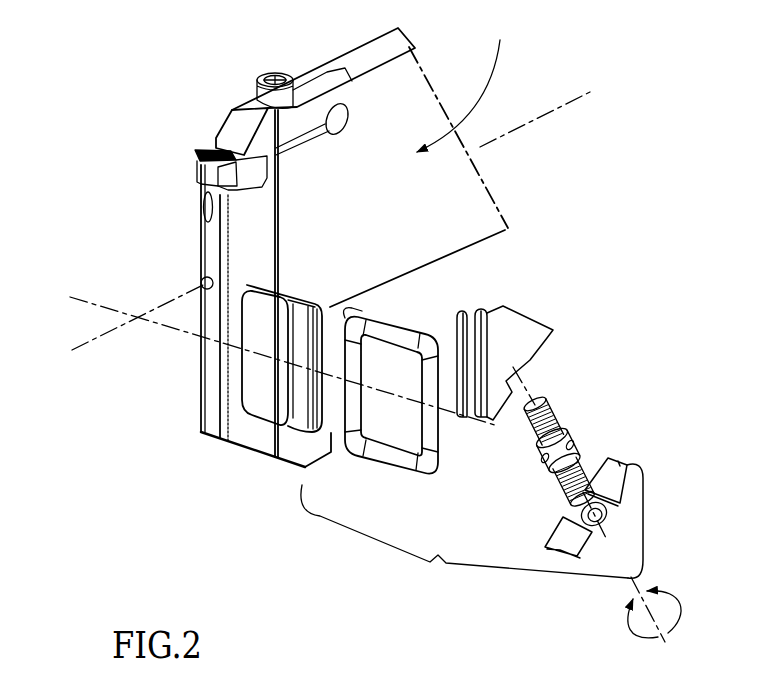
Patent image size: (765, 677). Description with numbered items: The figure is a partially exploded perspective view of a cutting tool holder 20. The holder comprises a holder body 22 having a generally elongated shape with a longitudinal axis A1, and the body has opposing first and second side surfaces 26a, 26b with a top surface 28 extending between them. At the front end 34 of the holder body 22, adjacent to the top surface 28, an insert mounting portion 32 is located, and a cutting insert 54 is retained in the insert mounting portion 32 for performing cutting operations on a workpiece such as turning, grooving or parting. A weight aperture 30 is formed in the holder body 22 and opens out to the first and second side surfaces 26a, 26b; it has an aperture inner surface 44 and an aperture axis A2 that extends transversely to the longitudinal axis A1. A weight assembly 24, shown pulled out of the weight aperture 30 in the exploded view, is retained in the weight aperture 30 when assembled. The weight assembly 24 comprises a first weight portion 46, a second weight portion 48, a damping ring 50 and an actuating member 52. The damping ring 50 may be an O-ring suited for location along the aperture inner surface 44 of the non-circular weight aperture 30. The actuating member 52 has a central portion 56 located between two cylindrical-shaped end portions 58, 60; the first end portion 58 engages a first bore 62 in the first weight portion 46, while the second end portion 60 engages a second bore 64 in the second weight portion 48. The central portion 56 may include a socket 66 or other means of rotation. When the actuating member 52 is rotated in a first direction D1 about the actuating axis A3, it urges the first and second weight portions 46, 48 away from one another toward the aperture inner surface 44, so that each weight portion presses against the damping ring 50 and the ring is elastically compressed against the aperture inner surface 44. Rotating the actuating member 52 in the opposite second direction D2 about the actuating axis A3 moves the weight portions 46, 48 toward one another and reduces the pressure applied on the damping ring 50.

The cutting tool holder 20 is at (152, 182).
The holder body 22 is at (437, 193).
The weight assembly 24 is at (464, 542).
The first side surface 26a is at (475, 83).
The second side surface 26b is at (297, 73).
The top surface 28 is at (318, 80).
The weight aperture 30 is at (266, 394).
The insert mounting portion 32 is at (222, 133).
The front end 34 is at (200, 238).
The aperture inner surface 44 is at (303, 392).
The first weight portion 46 is at (512, 343).
The second weight portion 48 is at (622, 524).
The damping ring 50 is at (386, 458).
The actuating member 52 is at (577, 423).
The cutting insert 54 is at (200, 170).
The central portion 56 is at (580, 430).
The first end portion 58 is at (545, 400).
The second end portion 60 is at (558, 504).
The first bore 62 is at (464, 310).
The second bore 64 is at (596, 518).
The socket 66 is at (533, 474).
The longitudinal axis A1 is at (333, 214).
The aperture axis A2 is at (280, 362).
The actuating axis A3 is at (481, 311).
The first direction D1 is at (666, 595).
The second direction D2 is at (627, 610).